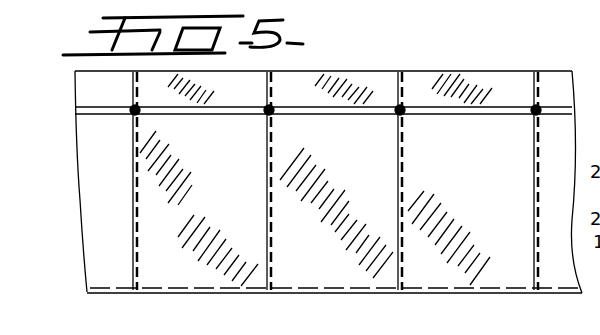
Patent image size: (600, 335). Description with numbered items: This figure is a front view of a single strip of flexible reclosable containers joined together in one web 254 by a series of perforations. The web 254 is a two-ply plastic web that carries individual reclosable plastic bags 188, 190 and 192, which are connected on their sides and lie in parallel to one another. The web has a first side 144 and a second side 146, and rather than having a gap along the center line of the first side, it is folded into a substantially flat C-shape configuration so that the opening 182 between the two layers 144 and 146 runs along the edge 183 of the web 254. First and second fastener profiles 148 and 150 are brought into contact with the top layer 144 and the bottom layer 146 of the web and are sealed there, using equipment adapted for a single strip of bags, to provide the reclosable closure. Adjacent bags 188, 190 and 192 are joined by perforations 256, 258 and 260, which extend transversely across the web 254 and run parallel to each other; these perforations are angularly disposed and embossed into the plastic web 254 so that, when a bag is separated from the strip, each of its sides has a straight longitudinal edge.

The first side 144 is at (155, 195).
The second side 146 is at (96, 167).
The first fastener profile 148 is at (455, 117).
The second fastener profile 150 is at (512, 106).
The opening 182 is at (443, 71).
The edge 183 is at (476, 71).
The reclosable plastic bag 188 is at (487, 268).
The reclosable plastic bag 190 is at (332, 268).
The reclosable plastic bag 192 is at (182, 278).
The web 254 is at (362, 66).
The perforation 256 is at (538, 295).
The perforation 258 is at (404, 295).
The perforation 260 is at (272, 295).